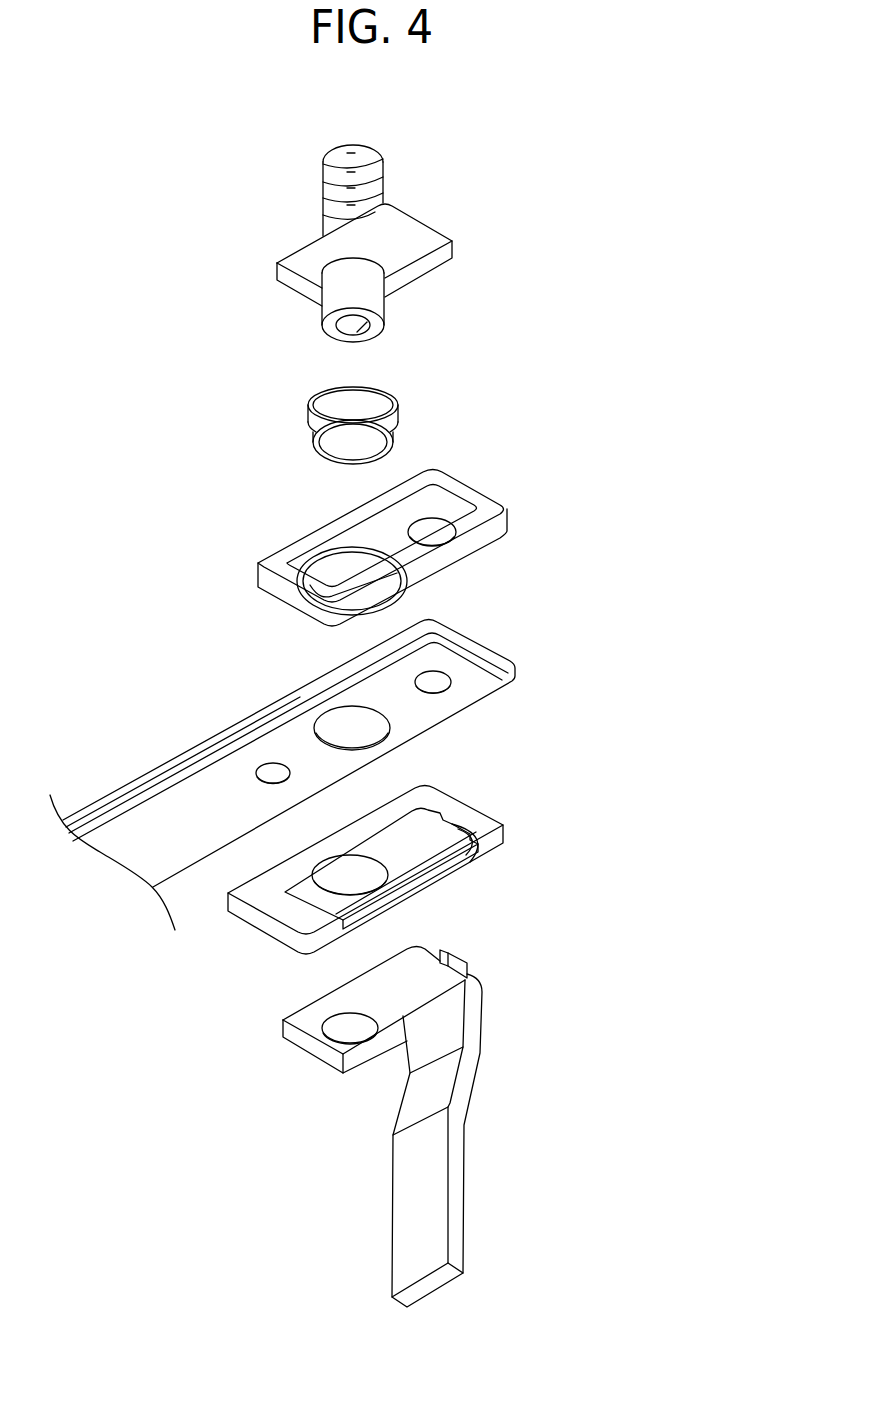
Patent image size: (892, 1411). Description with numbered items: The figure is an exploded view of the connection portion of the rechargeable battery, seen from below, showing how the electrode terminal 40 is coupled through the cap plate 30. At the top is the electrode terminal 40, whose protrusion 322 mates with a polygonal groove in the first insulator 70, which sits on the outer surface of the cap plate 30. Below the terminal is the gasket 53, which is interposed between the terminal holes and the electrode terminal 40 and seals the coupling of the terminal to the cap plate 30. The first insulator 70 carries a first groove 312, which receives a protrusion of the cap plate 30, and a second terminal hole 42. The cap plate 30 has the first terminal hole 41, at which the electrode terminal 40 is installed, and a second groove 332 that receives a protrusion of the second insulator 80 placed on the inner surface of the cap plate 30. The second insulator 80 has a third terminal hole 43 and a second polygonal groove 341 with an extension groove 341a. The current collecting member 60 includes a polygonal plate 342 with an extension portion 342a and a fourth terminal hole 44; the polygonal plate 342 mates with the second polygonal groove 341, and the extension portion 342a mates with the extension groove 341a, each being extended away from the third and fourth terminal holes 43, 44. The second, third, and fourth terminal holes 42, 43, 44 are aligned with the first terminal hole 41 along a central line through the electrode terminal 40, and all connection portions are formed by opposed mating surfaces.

The electrode terminal 40 is at (333, 174).
The protrusion 322 is at (438, 238).
The gasket 53 is at (311, 402).
The first groove 312 is at (447, 545).
The first insulator 70 is at (362, 528).
The second terminal hole 42 is at (340, 570).
The first terminal hole 41 is at (345, 725).
The cap plate 30 is at (328, 775).
The second groove 332 is at (433, 684).
The second insulator 80 is at (363, 885).
The extension groove 341a is at (462, 845).
The second polygonal groove 341 is at (339, 920).
The extension portion 342a is at (470, 962).
The polygonal plate 342 is at (403, 1118).
The third terminal hole 43 is at (340, 878).
The fourth terminal hole 44 is at (343, 1037).
The current collecting member 60 is at (408, 1112).